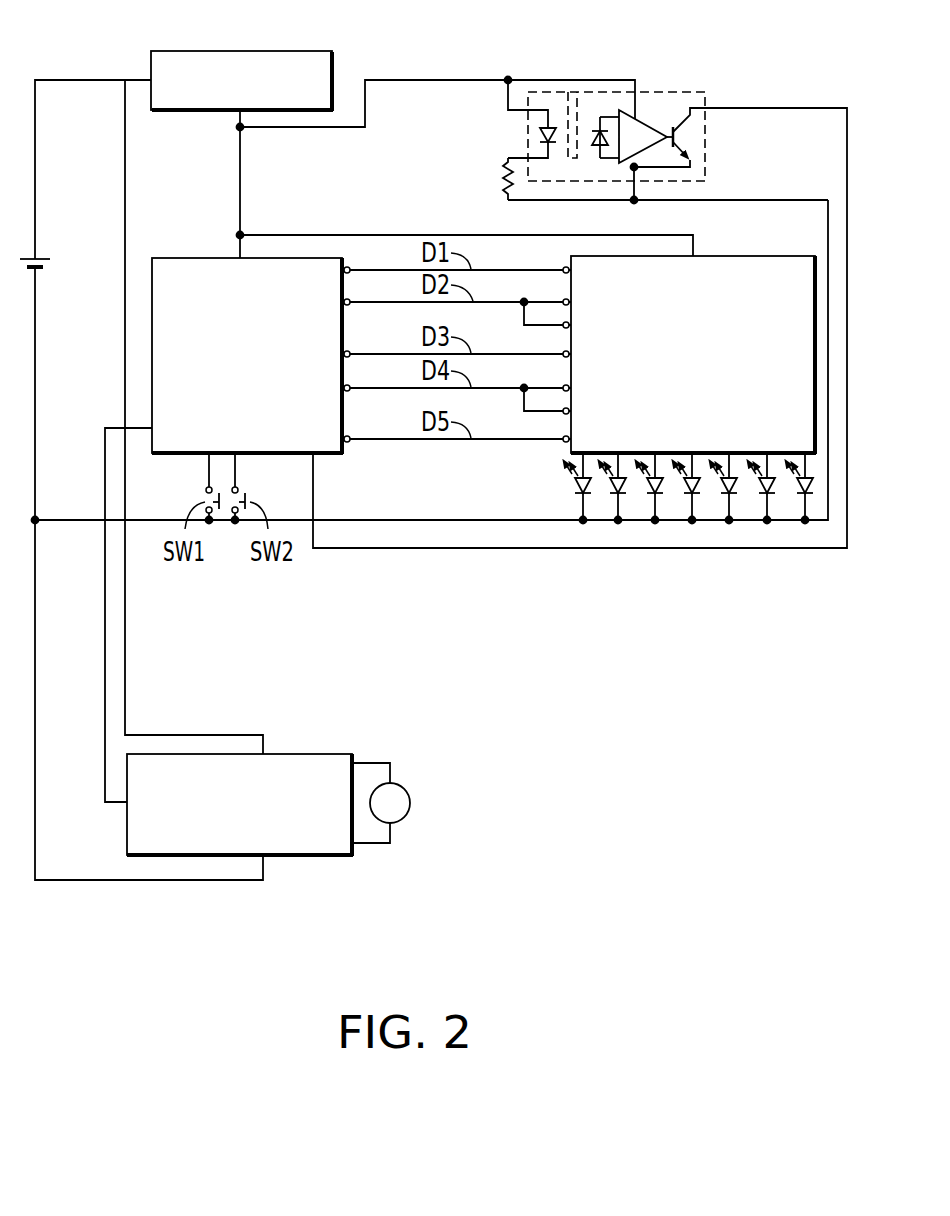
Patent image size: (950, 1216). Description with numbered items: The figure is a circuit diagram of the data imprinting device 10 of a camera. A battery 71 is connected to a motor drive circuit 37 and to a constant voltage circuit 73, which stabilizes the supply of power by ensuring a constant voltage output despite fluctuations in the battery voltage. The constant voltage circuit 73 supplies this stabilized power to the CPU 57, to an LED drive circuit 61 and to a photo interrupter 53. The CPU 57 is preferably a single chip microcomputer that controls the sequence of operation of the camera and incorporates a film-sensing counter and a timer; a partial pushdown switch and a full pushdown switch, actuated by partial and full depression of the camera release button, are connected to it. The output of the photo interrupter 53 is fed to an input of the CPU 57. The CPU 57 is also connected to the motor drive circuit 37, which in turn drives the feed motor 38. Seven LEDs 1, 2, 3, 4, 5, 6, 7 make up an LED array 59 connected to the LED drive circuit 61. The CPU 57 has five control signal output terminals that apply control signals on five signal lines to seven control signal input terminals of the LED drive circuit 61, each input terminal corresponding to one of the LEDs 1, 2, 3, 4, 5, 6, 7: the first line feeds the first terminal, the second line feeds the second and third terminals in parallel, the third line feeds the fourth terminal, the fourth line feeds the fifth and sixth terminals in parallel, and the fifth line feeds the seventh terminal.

The data imprinting device 10 is at (634, 780).
The LED 1 is at (578, 493).
The LED 2 is at (613, 493).
The LED 3 is at (650, 493).
The LED 4 is at (687, 493).
The LED 5 is at (724, 493).
The LED 6 is at (762, 493).
The LED 7 is at (800, 493).
The motor drive circuit 37 is at (290, 757).
The feed motor 38 is at (411, 797).
The photo interrupter 53 is at (542, 73).
The CPU 57 is at (216, 264).
The LED array 59 is at (687, 565).
The LED drive circuit 61 is at (727, 262).
The battery 71 is at (40, 256).
The constant voltage circuit 73 is at (197, 52).